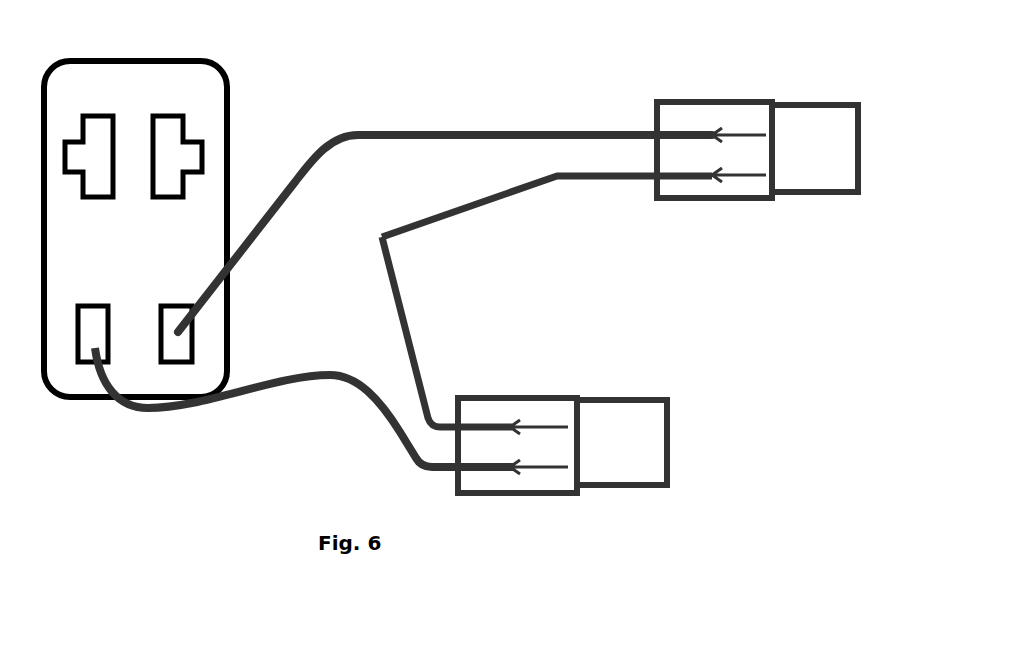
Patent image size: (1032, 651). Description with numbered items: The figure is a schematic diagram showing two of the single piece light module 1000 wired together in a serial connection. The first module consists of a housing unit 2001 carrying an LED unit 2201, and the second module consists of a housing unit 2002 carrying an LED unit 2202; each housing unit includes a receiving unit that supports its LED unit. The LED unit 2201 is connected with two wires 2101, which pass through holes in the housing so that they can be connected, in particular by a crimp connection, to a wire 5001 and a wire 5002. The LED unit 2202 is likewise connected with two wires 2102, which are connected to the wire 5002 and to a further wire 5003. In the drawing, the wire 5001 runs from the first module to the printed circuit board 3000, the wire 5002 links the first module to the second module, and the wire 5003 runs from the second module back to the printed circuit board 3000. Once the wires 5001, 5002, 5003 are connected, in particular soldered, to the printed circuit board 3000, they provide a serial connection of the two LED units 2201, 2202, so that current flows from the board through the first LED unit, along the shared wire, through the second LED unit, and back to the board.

The single piece light module 1000 is at (690, 285).
The housing unit 2001 is at (680, 198).
The housing unit 2002 is at (492, 395).
The wires 2101 is at (762, 128).
The wires 2102 is at (565, 420).
The LED unit 2201 is at (820, 192).
The LED unit 2202 is at (653, 395).
The printed circuit board 3000 is at (96, 420).
The wire 5001 is at (415, 128).
The wire 5002 is at (395, 232).
The wire 5003 is at (362, 370).